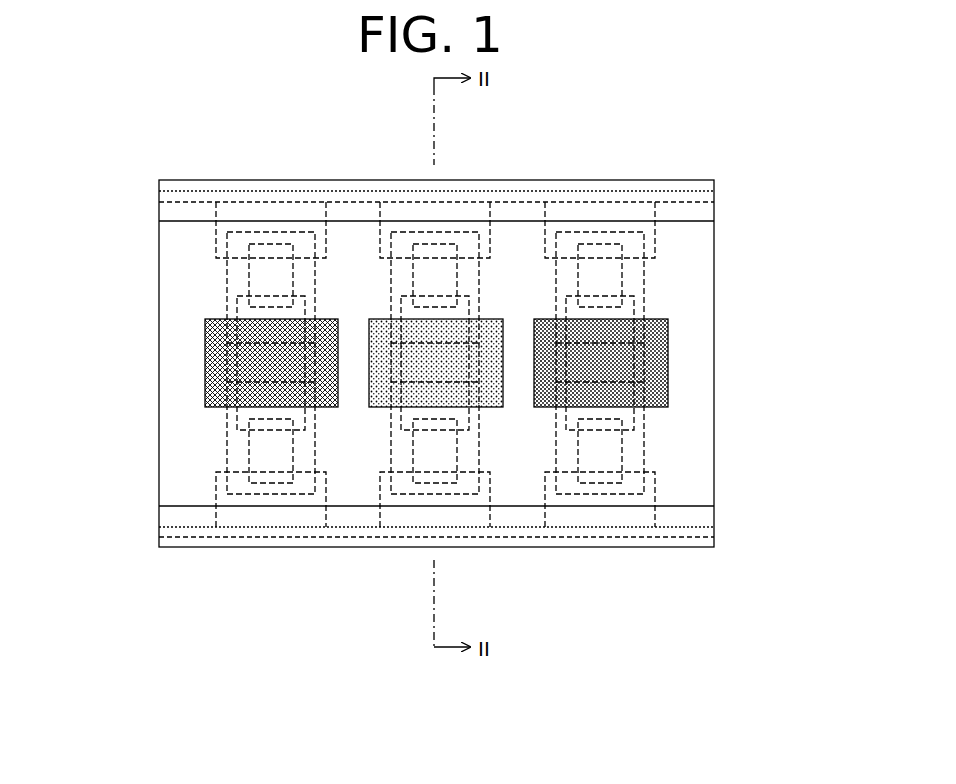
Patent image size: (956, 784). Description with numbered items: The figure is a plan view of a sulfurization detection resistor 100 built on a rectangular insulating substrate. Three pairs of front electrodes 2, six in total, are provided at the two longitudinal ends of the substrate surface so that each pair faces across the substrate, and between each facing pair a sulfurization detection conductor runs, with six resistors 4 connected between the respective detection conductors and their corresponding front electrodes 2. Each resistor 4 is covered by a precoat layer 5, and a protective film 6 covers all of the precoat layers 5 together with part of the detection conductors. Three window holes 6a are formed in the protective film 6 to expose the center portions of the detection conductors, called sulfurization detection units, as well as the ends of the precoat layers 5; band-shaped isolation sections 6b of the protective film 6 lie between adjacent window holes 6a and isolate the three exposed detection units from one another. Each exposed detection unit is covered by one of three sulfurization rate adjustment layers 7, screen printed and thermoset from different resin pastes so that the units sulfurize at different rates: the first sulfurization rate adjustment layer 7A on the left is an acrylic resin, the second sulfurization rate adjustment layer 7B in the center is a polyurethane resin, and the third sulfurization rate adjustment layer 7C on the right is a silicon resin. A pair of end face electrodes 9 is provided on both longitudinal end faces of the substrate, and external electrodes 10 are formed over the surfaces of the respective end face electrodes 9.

The sulfurization detection resistor 100 is at (718, 167).
The front electrodes 2 is at (216, 220).
The resistors 4 is at (413, 268).
The precoat layers 5 is at (391, 280).
The protective film 6 is at (195, 413).
The window holes 6a is at (205, 355).
The isolation sections 6b is at (360, 337).
The sulfurization rate adjustment layers 7 is at (440, 461).
The first sulfurization rate adjustment layer 7A is at (205, 378).
The second sulfurization rate adjustment layer 7B is at (492, 415).
The third sulfurization rate adjustment layer 7C is at (668, 346).
The end face electrodes 9 is at (605, 195).
The external electrodes 10 is at (173, 213).